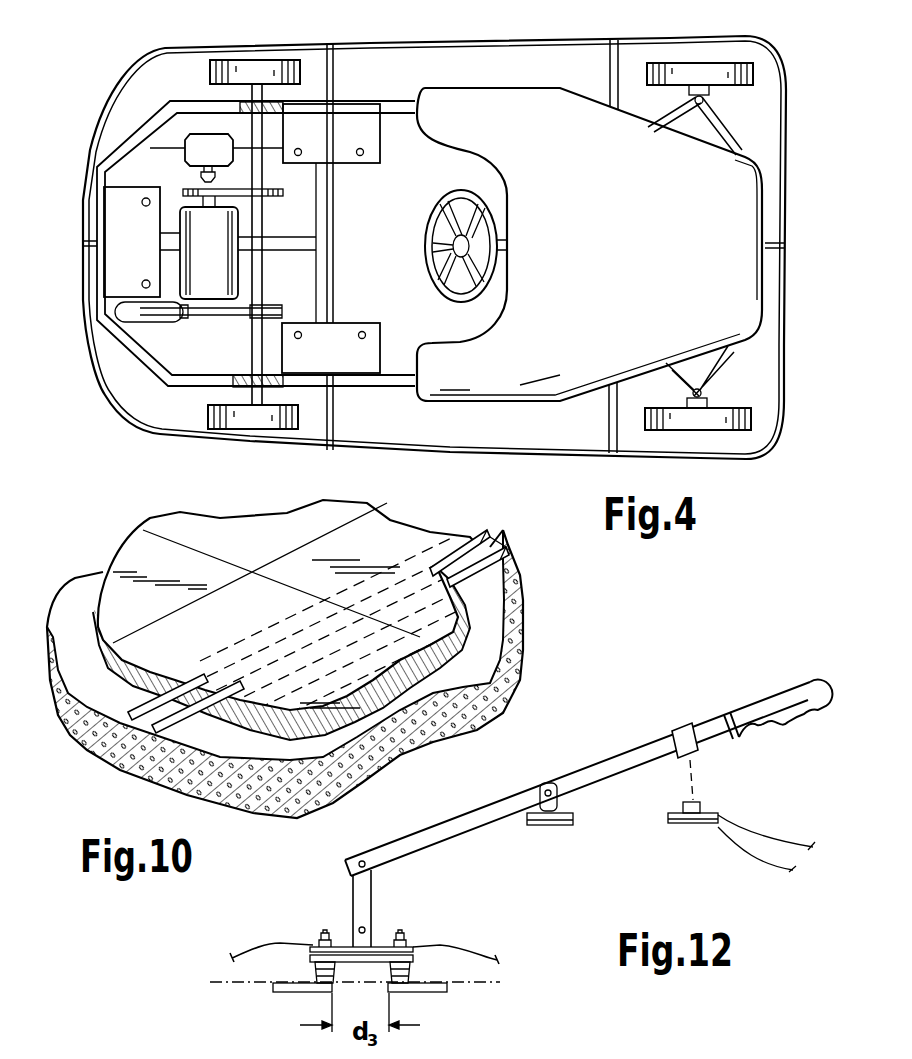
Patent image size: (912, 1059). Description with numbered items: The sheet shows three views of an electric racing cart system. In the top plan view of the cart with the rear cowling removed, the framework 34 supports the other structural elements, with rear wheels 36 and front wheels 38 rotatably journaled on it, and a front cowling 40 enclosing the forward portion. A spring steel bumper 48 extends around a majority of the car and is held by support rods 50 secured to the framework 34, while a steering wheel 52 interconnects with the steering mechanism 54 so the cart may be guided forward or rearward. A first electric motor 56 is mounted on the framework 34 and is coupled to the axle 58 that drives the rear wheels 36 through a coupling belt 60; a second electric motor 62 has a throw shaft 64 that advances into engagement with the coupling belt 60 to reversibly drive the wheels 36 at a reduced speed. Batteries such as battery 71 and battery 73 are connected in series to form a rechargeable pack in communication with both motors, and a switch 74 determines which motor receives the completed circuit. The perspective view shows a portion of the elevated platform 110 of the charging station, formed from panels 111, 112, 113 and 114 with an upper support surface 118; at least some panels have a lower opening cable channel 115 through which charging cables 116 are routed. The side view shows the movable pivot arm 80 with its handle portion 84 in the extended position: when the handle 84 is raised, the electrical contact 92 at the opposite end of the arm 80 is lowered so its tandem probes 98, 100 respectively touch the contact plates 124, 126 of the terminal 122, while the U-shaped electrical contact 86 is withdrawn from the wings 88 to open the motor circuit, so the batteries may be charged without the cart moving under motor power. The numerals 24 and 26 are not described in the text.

In FIG. 10, the deck base outer layer 24 is at (117, 710).
In FIG. 10, the deck base cushion layer 26 is at (168, 794).
In FIG. 4, the framework 34 is at (342, 283).
In FIG. 4, the rear wheels 36 is at (257, 60).
In FIG. 4, the front wheels 38 is at (753, 71).
In FIG. 4, the front cowling 40 is at (611, 245).
In FIG. 4, the spring steel bumper 48 is at (786, 152).
In FIG. 4, the support rods 50 is at (336, 70).
In FIG. 4, the steering wheel 52 is at (443, 296).
In FIG. 4, the steering mechanism 54 is at (712, 120).
In FIG. 4, the first electric motor 56 is at (196, 264).
In FIG. 4, the axle 58 is at (260, 220).
In FIG. 4, the coupling belt 60 is at (246, 194).
In FIG. 4, the second electric motor 62 is at (196, 162).
In FIG. 4, the throw shaft 64 is at (215, 174).
In FIG. 4, the battery 71 is at (321, 357).
In FIG. 4, the battery 73 is at (115, 250).
In FIG. 4, the switch 74 is at (317, 140).
In FIG. 12, the movable pivot arm 80 is at (578, 788).
In FIG. 12, the handle portion 84 is at (768, 702).
In FIG. 12, the electrical contact 86 is at (702, 752).
In FIG. 12, the wings 88 is at (701, 804).
In FIG. 12, the electrical contact 92 is at (410, 893).
In FIG. 12, the probe 98 is at (410, 972).
In FIG. 12, the probe 100 is at (316, 970).
In FIG. 10, the elevated platform 110 is at (94, 550).
In FIG. 10, the panel 111 is at (325, 510).
In FIG. 10, the panel 112 is at (394, 528).
In FIG. 10, the panel 113 is at (440, 658).
In FIG. 10, the panel 114 is at (110, 590).
In FIG. 10, the cable channel 115 is at (216, 745).
In FIG. 10, the charging cables 116 is at (498, 540).
In FIG. 10, the upper support surface 118 is at (185, 515).
In FIG. 12, the electrical terminal 122 is at (490, 935).
In FIG. 12, the contact plate 124 is at (426, 993).
In FIG. 12, the contact plate 126 is at (282, 993).